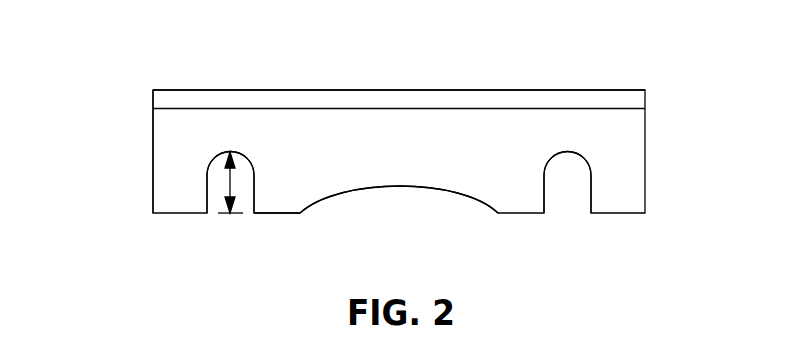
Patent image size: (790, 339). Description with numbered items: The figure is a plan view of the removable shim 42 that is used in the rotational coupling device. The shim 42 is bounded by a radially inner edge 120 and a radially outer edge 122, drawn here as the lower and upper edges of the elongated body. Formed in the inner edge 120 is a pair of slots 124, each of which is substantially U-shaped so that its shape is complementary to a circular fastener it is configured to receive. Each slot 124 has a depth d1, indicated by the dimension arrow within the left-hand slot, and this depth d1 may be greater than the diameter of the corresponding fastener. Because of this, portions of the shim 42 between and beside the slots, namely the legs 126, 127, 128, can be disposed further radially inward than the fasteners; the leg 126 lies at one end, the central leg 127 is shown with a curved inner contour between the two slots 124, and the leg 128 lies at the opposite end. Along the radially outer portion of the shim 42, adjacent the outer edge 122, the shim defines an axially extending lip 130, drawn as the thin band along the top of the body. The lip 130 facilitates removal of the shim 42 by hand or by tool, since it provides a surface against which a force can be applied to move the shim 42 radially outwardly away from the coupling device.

The shim 42 is at (215, 70).
The radially inner edge 120 is at (275, 213).
The radially outer edge 122 is at (180, 90).
The slot 124 is at (252, 186).
The leg 126 is at (178, 183).
The leg 127 is at (430, 168).
The leg 128 is at (620, 165).
The lip 130 is at (385, 100).
The slot depth d1 is at (228, 183).